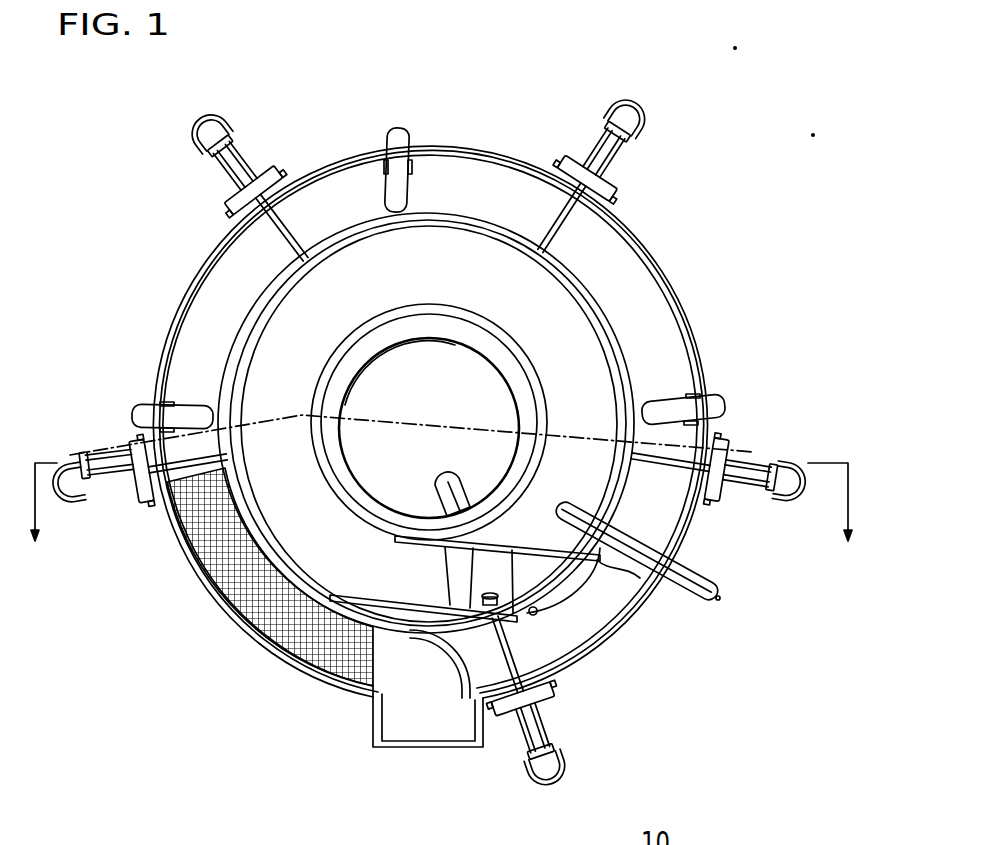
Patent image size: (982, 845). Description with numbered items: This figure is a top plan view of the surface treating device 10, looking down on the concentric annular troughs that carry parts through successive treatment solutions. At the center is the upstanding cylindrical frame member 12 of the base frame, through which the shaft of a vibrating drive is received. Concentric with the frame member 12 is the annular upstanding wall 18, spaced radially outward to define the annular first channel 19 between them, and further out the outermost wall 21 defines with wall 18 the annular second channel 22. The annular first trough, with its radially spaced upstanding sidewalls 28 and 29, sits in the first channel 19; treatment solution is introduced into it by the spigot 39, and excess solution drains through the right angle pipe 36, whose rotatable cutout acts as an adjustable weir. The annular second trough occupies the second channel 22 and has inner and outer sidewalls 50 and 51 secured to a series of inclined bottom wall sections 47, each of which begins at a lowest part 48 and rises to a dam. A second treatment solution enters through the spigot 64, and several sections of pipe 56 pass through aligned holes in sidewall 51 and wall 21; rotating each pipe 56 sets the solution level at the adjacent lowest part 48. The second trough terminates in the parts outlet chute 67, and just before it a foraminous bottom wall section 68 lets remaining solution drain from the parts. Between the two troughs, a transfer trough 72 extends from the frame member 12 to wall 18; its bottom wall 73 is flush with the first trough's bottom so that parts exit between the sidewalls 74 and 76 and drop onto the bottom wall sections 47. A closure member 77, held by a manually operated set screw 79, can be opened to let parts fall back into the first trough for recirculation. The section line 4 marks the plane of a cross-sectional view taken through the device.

The surface treating device 10 is at (440, 432).
The cylindrical frame member 12 is at (517, 357).
The annular upstanding wall 18 is at (536, 206).
The annular first channel 19 is at (450, 260).
The wall 21 is at (680, 308).
The annular second channel 22 is at (618, 255).
The sidewall 28 is at (345, 518).
The sidewall 29 is at (255, 507).
The right angle pipe 36 is at (438, 487).
The spigot 39 is at (708, 580).
The inclined bottom wall sections 47 is at (443, 165).
The lowest part 48 is at (272, 223).
The sidewall 50 is at (240, 320).
The sidewall 51 is at (186, 332).
The pipe 56 is at (256, 141).
The spigot 64 is at (393, 127).
The parts outlet chute 67 is at (422, 733).
The foraminous bottom wall section 68 is at (242, 593).
The transfer trough 72 is at (574, 590).
The bottom wall 73 is at (597, 558).
The sidewall 74 is at (538, 613).
The sidewall 76 is at (640, 590).
The closure member 77 is at (498, 560).
The set screw 79 is at (483, 603).
The section line 4- 4 is at (440, 503).